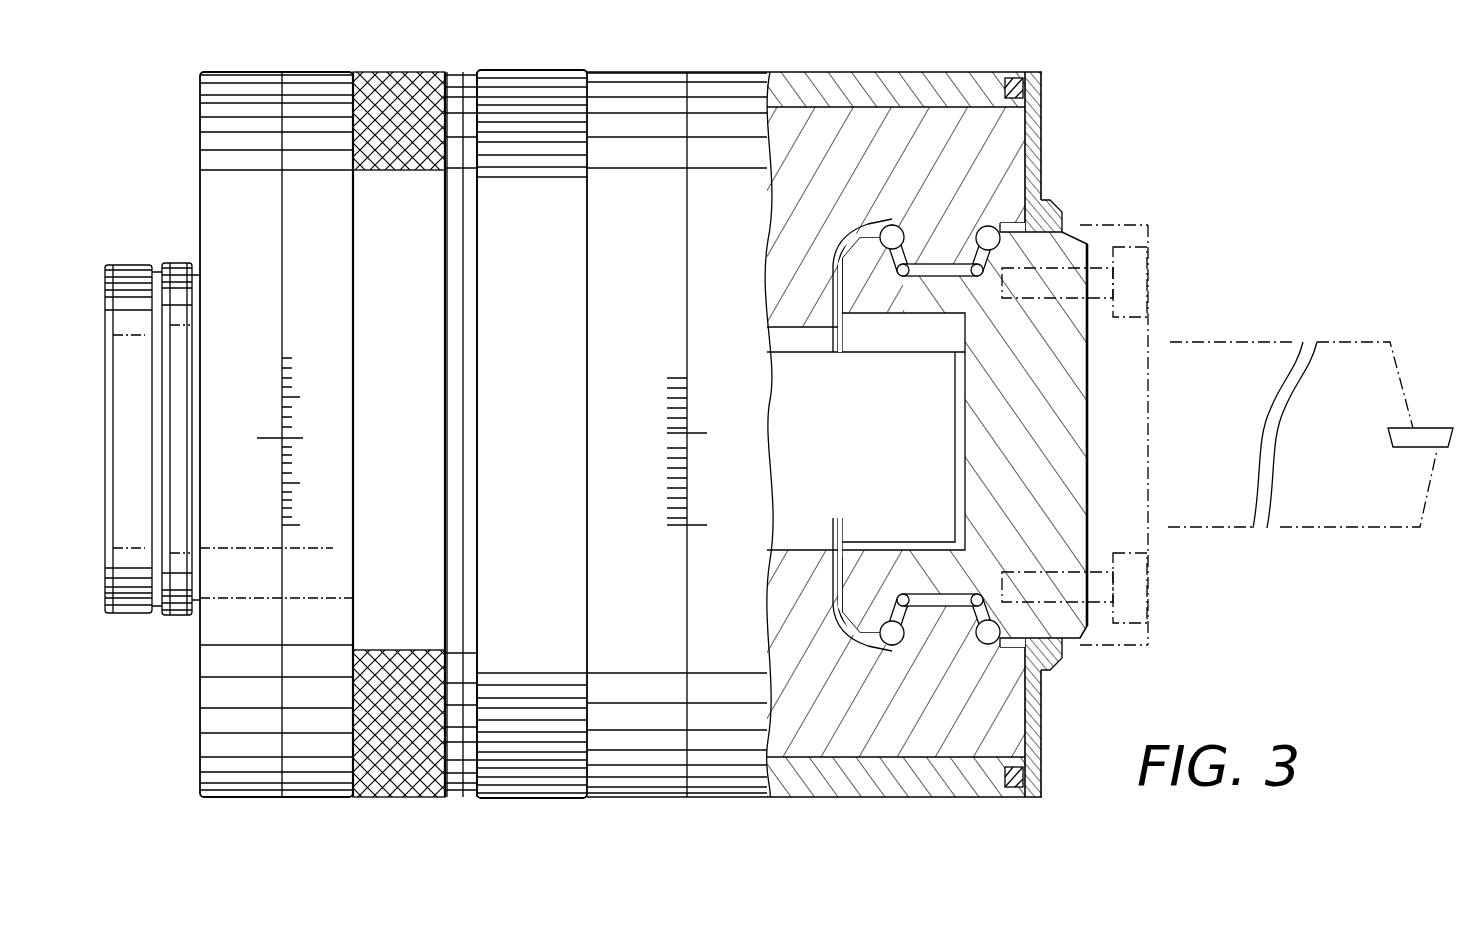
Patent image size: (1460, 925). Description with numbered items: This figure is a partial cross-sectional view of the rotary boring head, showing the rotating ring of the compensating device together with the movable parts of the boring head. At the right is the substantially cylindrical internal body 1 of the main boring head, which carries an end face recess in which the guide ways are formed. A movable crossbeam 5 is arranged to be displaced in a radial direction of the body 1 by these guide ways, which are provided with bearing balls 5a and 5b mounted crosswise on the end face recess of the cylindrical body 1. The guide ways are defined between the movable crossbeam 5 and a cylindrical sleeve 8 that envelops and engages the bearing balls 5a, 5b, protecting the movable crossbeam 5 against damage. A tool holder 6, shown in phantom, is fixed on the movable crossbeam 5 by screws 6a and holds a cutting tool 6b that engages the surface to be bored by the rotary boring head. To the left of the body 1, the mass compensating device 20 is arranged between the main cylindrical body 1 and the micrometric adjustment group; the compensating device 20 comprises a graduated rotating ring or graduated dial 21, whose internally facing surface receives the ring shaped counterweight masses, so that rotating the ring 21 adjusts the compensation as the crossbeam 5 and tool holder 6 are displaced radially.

The cylindrical internal body 1 is at (997, 138).
The movable crossbeam 5 is at (1055, 248).
The bearing ball 5a is at (892, 622).
The bearing ball 5b is at (975, 596).
The tool holder 6 is at (1128, 470).
The screw 6a is at (1123, 293).
The cutting tool 6b is at (1445, 416).
The cylindrical sleeve 8 is at (962, 90).
The mass compensating device 20 is at (670, 808).
The graduated rotating ring 21 is at (602, 745).